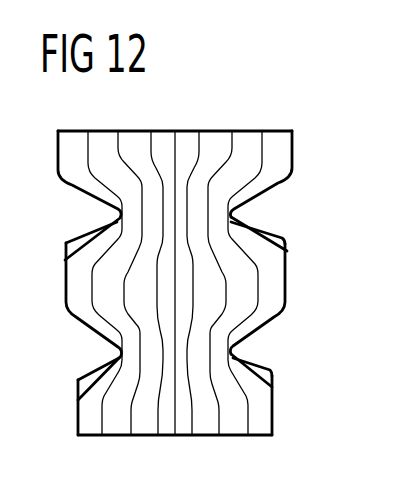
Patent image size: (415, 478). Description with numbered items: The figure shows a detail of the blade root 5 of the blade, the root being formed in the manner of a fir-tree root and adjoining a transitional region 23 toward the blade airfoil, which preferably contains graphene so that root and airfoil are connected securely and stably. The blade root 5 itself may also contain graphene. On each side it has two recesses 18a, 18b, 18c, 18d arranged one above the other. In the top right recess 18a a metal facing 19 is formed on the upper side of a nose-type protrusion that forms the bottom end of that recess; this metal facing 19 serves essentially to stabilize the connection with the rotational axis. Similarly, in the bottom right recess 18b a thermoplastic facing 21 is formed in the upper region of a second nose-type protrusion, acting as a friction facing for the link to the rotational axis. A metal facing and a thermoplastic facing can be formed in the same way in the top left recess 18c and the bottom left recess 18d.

The transitional region 23 is at (267, 112).
The blade root 5 is at (282, 150).
The recess 18a is at (232, 212).
The recess 18b is at (230, 347).
The recess 18c is at (120, 217).
The recess 18d is at (120, 350).
The metal facing 19 is at (276, 235).
The thermoplastic facing 21 is at (269, 369).